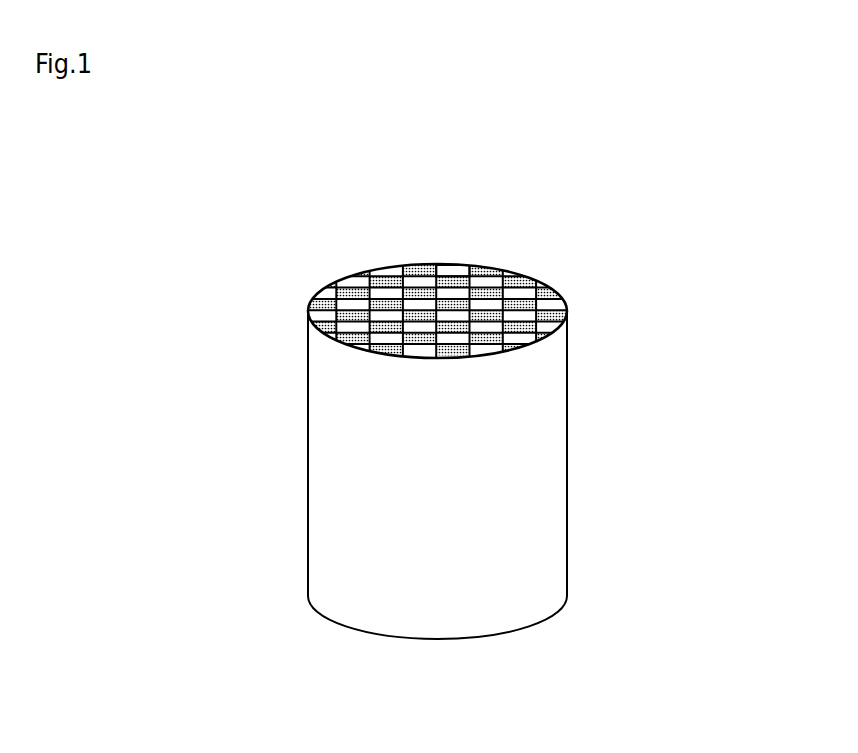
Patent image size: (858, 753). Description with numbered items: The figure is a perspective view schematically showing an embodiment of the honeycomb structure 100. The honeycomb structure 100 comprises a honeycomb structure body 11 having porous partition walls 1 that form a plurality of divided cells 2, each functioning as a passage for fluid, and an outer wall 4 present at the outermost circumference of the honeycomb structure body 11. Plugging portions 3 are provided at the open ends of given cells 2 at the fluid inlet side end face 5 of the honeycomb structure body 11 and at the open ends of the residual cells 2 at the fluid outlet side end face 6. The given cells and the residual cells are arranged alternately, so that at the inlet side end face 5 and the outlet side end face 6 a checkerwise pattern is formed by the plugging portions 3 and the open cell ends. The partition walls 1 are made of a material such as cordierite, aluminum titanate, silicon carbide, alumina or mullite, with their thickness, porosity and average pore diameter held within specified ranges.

The honeycomb structure 100 is at (810, 184).
The honeycomb structure body 11 is at (570, 497).
The partition wall 1 is at (456, 271).
The cell 2 is at (348, 283).
The plugging portion 3 is at (380, 275).
The outer wall 4 is at (568, 420).
The fluid inlet side end face 5 is at (310, 305).
The fluid outlet side end face 6 is at (557, 612).